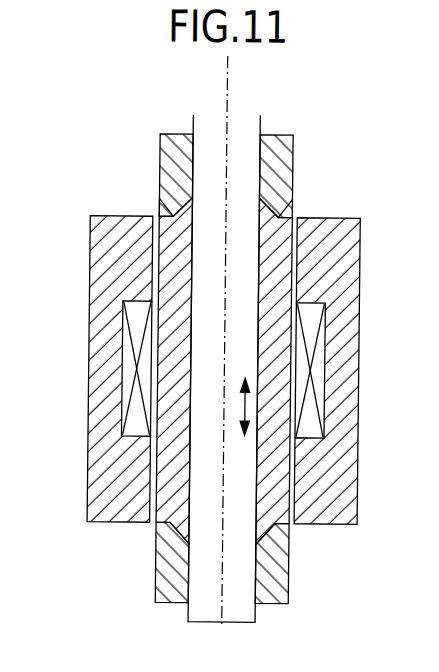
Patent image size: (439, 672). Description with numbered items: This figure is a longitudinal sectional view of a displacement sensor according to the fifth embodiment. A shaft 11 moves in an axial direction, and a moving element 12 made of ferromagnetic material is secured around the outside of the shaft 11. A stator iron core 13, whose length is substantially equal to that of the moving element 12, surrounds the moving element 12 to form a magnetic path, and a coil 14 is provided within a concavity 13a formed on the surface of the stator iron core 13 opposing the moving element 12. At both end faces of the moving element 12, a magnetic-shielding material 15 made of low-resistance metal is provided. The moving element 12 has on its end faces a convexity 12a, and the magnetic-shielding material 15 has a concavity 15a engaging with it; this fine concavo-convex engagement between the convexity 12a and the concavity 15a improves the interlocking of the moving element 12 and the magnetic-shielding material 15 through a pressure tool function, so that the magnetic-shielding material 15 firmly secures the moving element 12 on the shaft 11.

The shaft 11 is at (244, 136).
The moving element 12 is at (332, 222).
The convexity 12a is at (160, 203).
The stator iron core 13 is at (91, 327).
The concavity 13a is at (124, 375).
The coil 14 is at (320, 360).
The magnetic-shielding material 15 is at (286, 158).
The concavity 15a is at (178, 134).